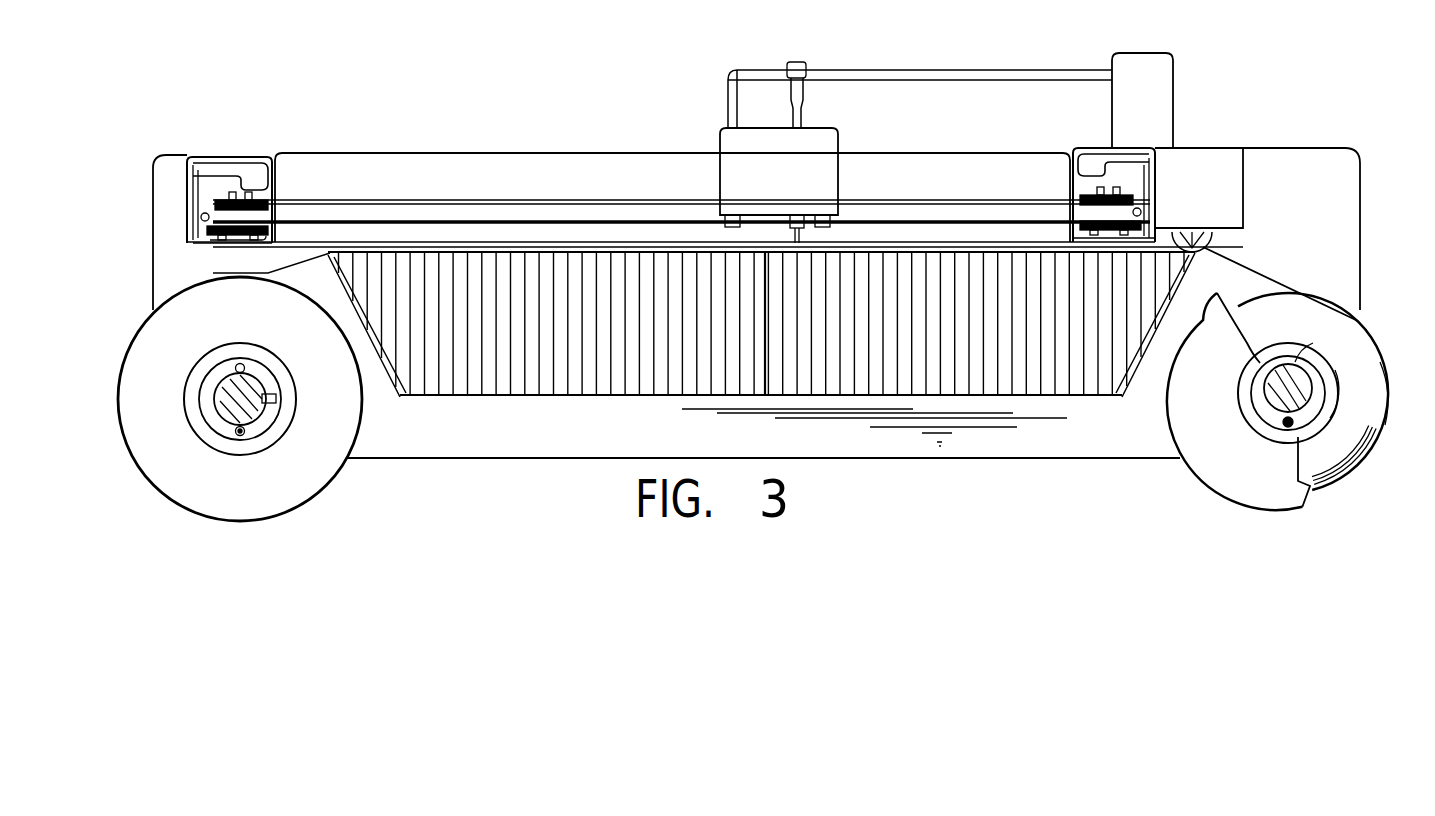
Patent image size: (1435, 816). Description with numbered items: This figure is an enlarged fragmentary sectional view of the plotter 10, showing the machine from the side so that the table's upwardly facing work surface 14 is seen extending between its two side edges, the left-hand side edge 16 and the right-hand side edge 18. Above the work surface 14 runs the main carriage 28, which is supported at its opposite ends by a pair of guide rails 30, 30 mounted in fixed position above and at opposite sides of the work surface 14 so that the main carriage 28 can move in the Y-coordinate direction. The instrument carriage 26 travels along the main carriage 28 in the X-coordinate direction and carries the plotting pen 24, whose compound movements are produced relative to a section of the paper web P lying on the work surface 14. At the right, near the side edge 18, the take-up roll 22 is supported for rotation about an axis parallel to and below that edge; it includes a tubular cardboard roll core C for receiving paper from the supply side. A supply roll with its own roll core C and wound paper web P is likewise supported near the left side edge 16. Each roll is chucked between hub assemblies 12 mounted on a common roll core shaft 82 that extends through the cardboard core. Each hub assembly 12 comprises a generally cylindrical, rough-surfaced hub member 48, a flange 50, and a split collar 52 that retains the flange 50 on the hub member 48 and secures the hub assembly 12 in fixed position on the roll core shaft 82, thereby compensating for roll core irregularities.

The plotter 10 is at (1276, 112).
The hub assembly 12 is at (138, 308).
The work surface 14 is at (940, 248).
The side edge 16 is at (316, 250).
The side edge 18 is at (1215, 243).
The take-up roll 22 is at (1387, 366).
The plotting pen 24 is at (797, 60).
The instrument carriage 26 is at (732, 140).
The main carriage 28 is at (562, 196).
The guide rails 30 is at (232, 157).
The hub member 48 is at (1335, 424).
The flange 50 is at (283, 483).
The split collar 52 is at (213, 435).
The roll core shaft 82 is at (247, 393).
The paper web P is at (1277, 273).
The roll core C is at (1313, 343).